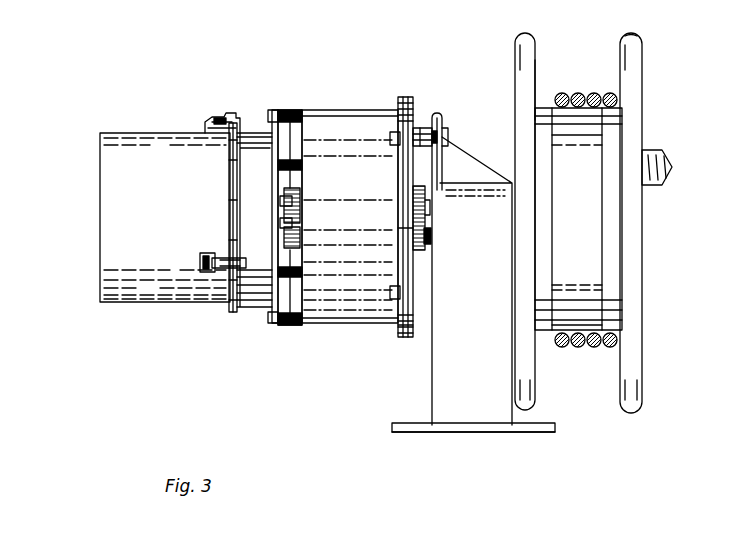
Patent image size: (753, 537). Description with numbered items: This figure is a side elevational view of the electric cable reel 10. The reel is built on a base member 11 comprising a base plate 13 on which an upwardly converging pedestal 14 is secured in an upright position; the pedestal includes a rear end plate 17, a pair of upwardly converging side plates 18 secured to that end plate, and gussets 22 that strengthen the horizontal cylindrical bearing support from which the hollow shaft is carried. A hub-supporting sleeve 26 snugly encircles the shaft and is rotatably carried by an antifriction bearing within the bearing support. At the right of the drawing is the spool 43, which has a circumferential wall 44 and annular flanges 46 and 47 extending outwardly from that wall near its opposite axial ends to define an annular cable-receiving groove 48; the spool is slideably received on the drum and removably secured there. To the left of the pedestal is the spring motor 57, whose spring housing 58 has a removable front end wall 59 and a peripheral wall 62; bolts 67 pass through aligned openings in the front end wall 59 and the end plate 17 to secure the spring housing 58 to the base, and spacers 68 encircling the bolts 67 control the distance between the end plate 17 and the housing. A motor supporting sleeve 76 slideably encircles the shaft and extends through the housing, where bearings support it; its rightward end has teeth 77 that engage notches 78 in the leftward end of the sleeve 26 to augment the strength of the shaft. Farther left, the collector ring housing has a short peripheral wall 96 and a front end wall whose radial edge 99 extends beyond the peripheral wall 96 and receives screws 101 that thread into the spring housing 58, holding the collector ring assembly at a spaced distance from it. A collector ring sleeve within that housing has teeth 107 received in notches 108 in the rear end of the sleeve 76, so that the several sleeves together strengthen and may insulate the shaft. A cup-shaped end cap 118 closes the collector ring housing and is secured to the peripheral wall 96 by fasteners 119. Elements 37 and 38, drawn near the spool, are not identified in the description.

The electric cable reel 10 is at (655, 205).
The base member 11 is at (508, 448).
The base plate 13 is at (422, 431).
The pedestal 14 is at (428, 407).
The rear end plate 17 is at (437, 112).
The side plate 18 is at (457, 407).
The gusset 22 is at (466, 157).
The hub-supporting sleeve 26 is at (429, 240).
The spring coils 37 is at (599, 95).
The nut 38 is at (663, 157).
The spool 43 is at (644, 61).
The circumferential wall 44 is at (586, 278).
The annular flange 46 is at (515, 50).
The annular flange 47 is at (631, 37).
The annular cable-receiving groove 48 is at (540, 72).
The spring motor 57 is at (372, 102).
The spring housing 58 is at (392, 327).
The front end wall 59 is at (413, 98).
The peripheral wall 62 is at (347, 213).
The bolts 67 is at (443, 121).
The spacers 68 is at (424, 147).
The motor supporting sleeve 76 is at (285, 215).
The teeth 77 is at (404, 232).
The notches 78 is at (428, 213).
The peripheral wall 96 is at (236, 313).
The radial edge 99 is at (279, 324).
The screws 101 is at (279, 114).
The teeth 107 is at (284, 205).
The notches 108 is at (286, 225).
The cup-shaped end cap 118 is at (96, 185).
The fasteners 119 is at (212, 114).